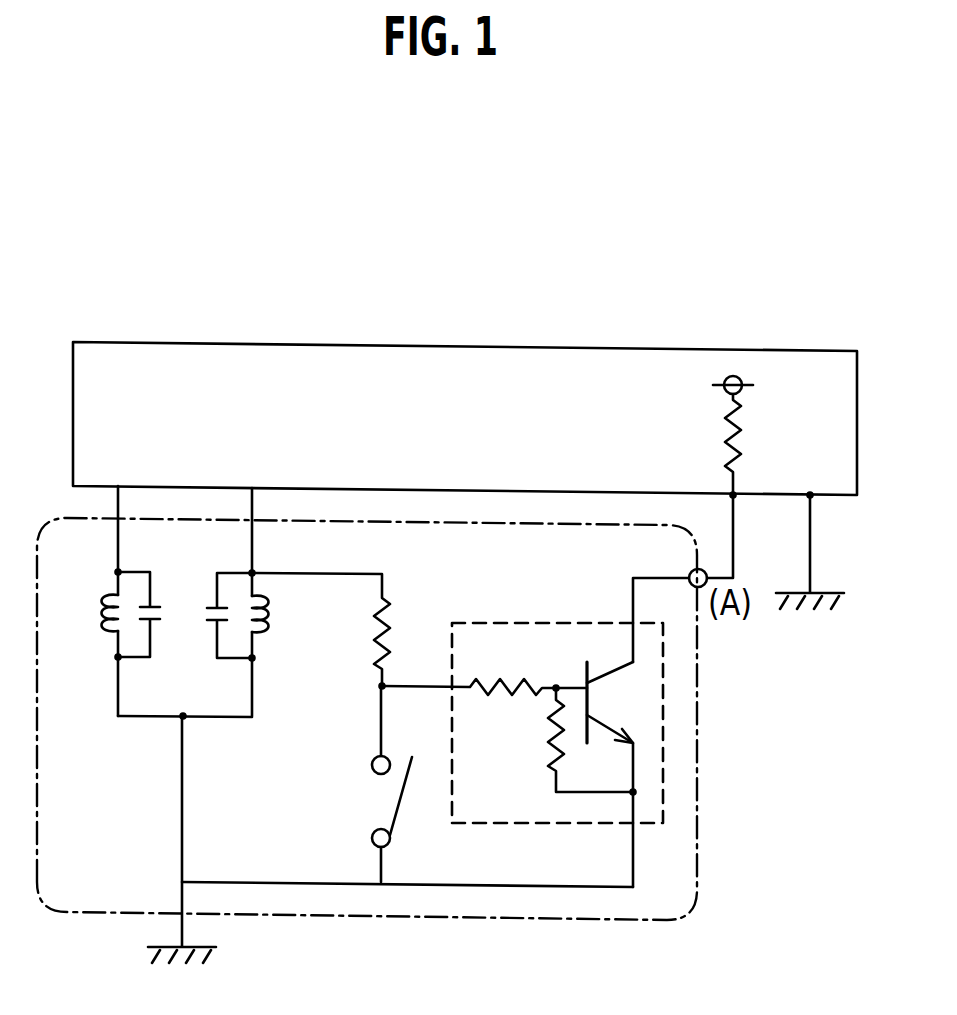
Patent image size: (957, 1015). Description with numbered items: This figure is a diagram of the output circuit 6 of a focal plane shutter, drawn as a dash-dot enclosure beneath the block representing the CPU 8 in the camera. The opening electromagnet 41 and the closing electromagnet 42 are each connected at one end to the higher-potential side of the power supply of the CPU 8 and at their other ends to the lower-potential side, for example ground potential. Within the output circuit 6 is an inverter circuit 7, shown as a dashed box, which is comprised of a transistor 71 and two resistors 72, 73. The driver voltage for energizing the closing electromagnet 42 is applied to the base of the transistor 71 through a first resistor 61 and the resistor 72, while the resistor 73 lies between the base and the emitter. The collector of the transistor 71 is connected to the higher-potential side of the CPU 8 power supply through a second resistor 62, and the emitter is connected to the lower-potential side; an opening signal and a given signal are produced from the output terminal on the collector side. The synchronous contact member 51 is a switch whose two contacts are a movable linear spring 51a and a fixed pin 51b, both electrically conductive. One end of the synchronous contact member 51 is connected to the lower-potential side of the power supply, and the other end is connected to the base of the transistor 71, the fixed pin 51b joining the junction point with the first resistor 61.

The CPU 8 is at (630, 348).
The second resistor 62 is at (743, 433).
The opening electromagnet 41 is at (100, 618).
The closing electromagnet 42 is at (268, 617).
The first resistor 61 is at (393, 630).
The resistor 72 is at (495, 672).
The resistor 73 is at (545, 738).
The transistor 71 is at (615, 705).
The inverter circuit 7 is at (645, 828).
The synchronous contact member 51 is at (359, 840).
The movable linear spring 51a is at (397, 802).
The fixed pin 51b is at (368, 766).
The output circuit 6 is at (102, 913).